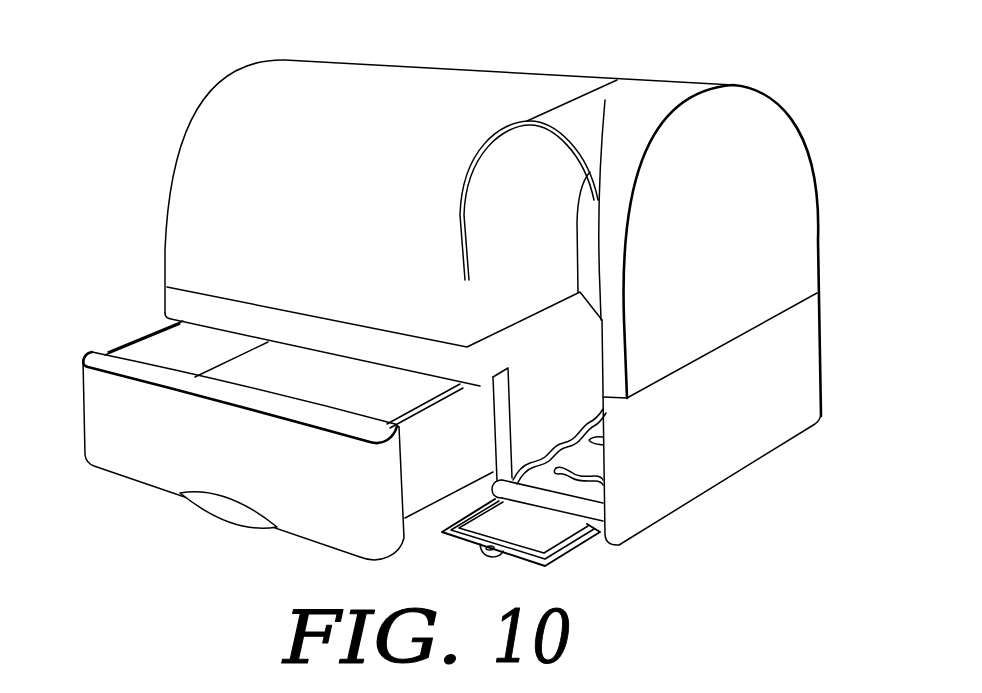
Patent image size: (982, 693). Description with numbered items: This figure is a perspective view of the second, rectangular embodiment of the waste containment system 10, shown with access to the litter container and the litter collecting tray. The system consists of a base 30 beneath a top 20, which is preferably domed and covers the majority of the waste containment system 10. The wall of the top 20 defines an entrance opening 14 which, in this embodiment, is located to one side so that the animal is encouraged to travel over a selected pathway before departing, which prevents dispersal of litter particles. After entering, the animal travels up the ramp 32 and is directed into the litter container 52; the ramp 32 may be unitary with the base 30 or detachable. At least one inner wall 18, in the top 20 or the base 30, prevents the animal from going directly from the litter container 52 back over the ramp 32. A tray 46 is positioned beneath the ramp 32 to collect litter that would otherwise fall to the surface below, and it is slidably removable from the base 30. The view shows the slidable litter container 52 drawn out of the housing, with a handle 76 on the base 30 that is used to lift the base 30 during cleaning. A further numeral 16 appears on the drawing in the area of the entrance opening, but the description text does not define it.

The waste containment system 10 is at (152, 190).
The entrance opening 14 is at (593, 227).
The door opening 16 is at (605, 100).
The inner wall 18 is at (524, 413).
The top 20 is at (790, 213).
The base 30 is at (731, 453).
The ramp 32 is at (596, 498).
The tray 46 is at (548, 538).
The litter container 52 is at (200, 338).
The handle 76 is at (206, 508).